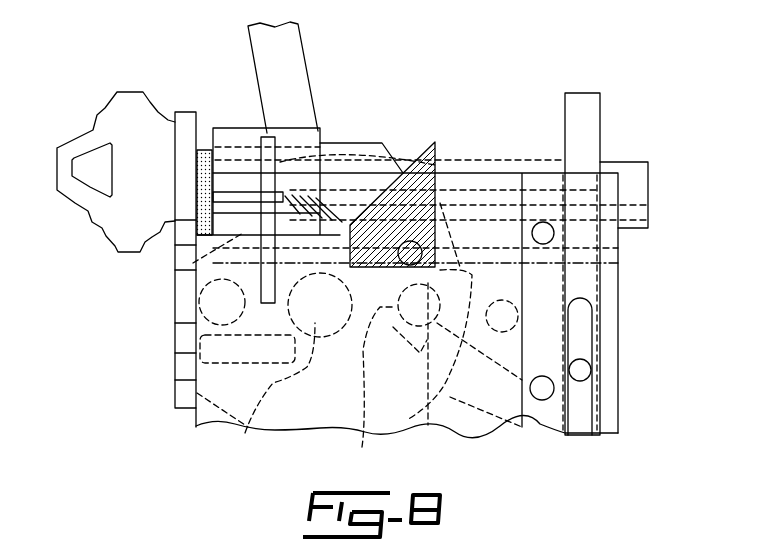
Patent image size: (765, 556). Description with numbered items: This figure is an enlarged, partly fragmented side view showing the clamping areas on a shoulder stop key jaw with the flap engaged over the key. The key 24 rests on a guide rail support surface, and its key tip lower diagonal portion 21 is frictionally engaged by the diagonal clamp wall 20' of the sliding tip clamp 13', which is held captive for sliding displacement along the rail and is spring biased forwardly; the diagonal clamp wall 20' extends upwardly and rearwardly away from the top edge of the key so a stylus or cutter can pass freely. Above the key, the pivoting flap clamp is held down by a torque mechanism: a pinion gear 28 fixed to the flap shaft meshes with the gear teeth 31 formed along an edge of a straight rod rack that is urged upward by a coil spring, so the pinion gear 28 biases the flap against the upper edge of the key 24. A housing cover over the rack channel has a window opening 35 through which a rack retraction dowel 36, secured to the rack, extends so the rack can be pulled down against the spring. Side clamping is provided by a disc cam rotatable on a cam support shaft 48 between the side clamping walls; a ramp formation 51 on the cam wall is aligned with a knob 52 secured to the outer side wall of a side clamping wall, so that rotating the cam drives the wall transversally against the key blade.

The key 24 is at (115, 112).
The diagonal clamp wall 20' is at (420, 176).
The sliding tip clamp 13' is at (464, 186).
The key tip lower diagonal portion 21 is at (447, 203).
The gear teeth 31 is at (592, 160).
The pinion gear 28 is at (633, 228).
The knob 52 is at (197, 273).
The window opening 35 is at (583, 332).
The rack retraction dowel 36 is at (582, 368).
The cam support shaft 48 is at (270, 391).
The ramp formation 51 is at (368, 390).